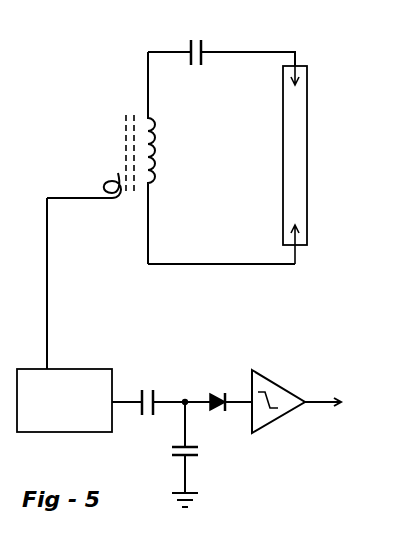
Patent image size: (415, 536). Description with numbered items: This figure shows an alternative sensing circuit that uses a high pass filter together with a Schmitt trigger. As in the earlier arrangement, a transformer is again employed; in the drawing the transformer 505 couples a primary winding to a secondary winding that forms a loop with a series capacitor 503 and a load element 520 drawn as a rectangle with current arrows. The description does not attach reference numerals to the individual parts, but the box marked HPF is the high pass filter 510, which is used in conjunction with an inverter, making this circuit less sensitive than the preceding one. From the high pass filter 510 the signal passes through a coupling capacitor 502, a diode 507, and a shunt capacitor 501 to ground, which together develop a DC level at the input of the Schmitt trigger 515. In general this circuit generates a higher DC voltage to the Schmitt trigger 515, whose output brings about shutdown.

The capacitor 501 is at (206, 454).
The capacitor 502 is at (148, 389).
The capacitor 503 is at (221, 39).
The transformer 505 is at (101, 158).
The diode 507 is at (218, 415).
The high pass filter 510 is at (64, 328).
The comparator amplifier 515 is at (301, 408).
The lamp / load 520 is at (253, 165).